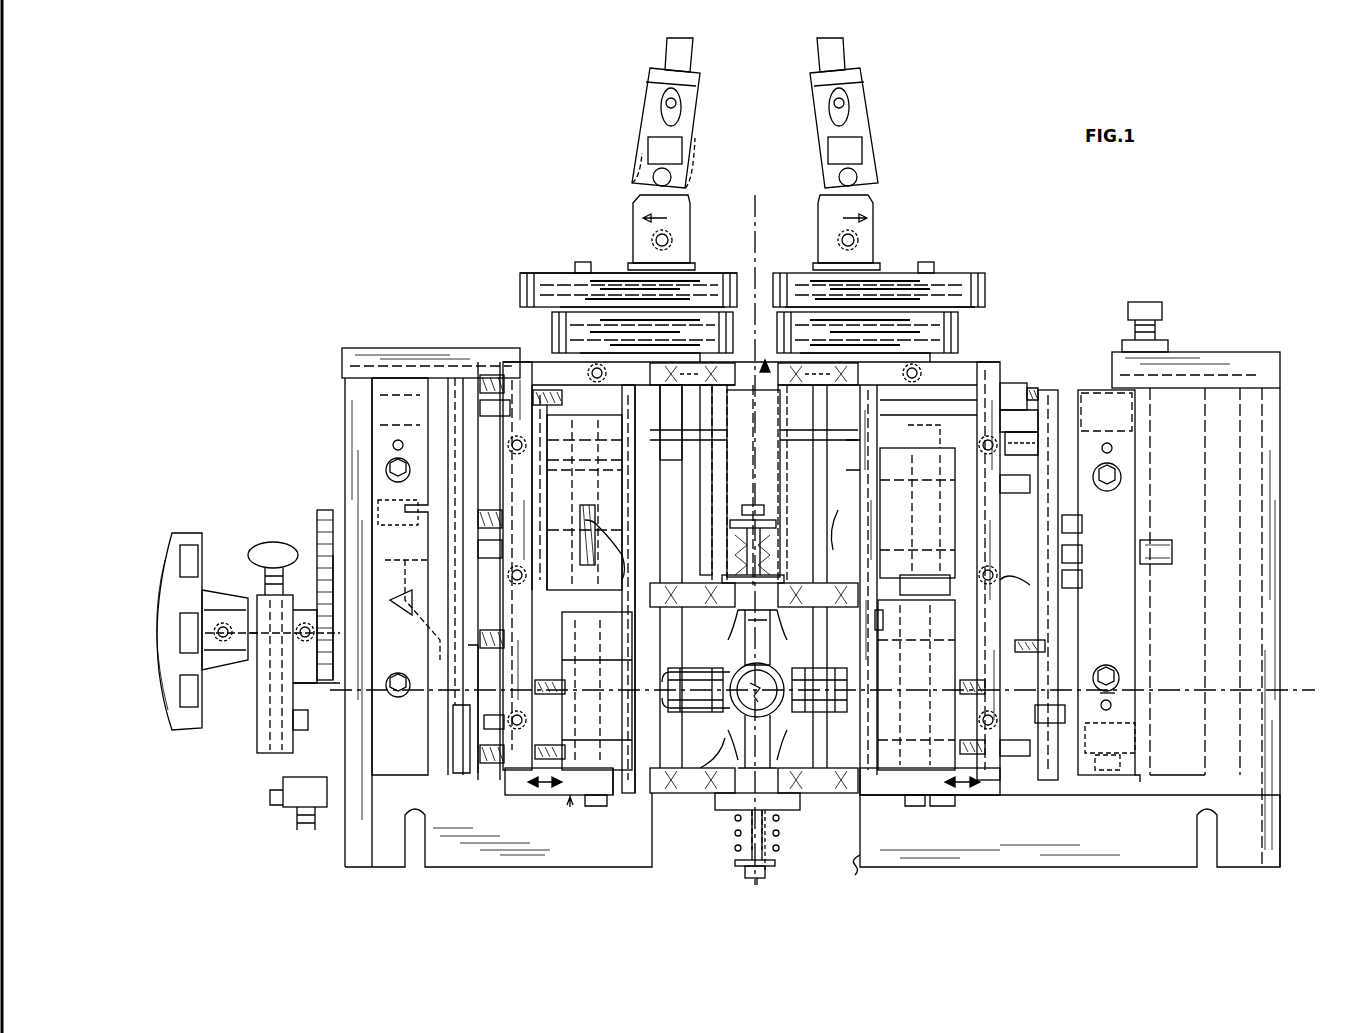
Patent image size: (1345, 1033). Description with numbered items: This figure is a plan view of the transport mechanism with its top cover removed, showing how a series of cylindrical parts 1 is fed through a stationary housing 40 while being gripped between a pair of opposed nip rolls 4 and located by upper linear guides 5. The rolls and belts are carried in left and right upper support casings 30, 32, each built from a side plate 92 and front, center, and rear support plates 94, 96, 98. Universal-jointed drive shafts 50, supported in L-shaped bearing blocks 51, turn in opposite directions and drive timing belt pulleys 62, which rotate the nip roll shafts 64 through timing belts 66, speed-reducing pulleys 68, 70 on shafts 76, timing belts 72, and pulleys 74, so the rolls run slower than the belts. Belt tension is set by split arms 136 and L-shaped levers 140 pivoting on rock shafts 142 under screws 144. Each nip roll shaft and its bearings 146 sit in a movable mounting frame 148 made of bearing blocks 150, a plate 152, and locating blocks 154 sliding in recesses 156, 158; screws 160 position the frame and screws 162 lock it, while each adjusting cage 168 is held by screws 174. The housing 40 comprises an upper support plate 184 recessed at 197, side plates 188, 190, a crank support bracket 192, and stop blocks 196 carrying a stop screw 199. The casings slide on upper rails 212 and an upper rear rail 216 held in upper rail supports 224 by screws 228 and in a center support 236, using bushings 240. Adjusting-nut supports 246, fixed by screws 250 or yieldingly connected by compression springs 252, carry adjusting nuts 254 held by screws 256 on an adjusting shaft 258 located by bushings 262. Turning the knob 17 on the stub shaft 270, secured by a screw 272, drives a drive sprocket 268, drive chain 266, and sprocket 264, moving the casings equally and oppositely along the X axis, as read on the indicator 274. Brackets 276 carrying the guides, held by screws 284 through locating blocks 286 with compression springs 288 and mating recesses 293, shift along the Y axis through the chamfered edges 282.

The cylindrical parts 1 is at (778, 650).
The nip rolls 4 is at (785, 683).
The upper linear guides 5 is at (770, 728).
The knob 17 is at (183, 730).
The upper support casing 30 is at (571, 814).
The upper support casing 32 is at (950, 813).
The enclosure / stationary housing 40 is at (957, 863).
The universal-jointed drive shafts 50 is at (666, 48).
The L-shaped bearing blocks 51 is at (540, 325).
The timing belt pulleys 62 is at (700, 273).
The nip roll shafts 64 is at (710, 420).
The timing belts 66 is at (985, 278).
The speed-reducing pulley 68 is at (525, 273).
The speed-reducing pulley 70 is at (555, 335).
The timing belts 72 is at (962, 335).
The pulleys 74 is at (770, 280).
The shafts 76 is at (565, 580).
The side plate 92 is at (600, 515).
The front support plate 94 is at (965, 793).
The center support plate 96 is at (931, 685).
The rear support plate 98 is at (1000, 355).
The split arms 136 is at (640, 640).
The L-shaped levers 140 is at (542, 782).
The rock shafts 142 is at (567, 643).
The screws 144 is at (1045, 690).
The bearings 146 is at (648, 795).
The movable mounting frames 148 is at (767, 362).
The bearing blocks 150 is at (848, 522).
The plate 152 is at (849, 469).
The locating blocks 154 is at (865, 480).
The recess 156 is at (615, 810).
The recess 158 is at (604, 353).
The screws 160 is at (472, 760).
The screws 162 is at (907, 813).
The adjusting cage 168 is at (960, 445).
The screws 174 is at (1065, 505).
The upper support plate 184 is at (504, 874).
The side plate 188 is at (345, 840).
The side plate 190 is at (1282, 400).
The crank support bracket 192 is at (257, 758).
The stop blocks 196 is at (375, 348).
The recess 197 is at (837, 873).
The stop screw 199 is at (1165, 305).
The upper rails 212 is at (440, 755).
The upper rail 216 is at (435, 380).
The upper rail supports 224 is at (375, 460).
The screws 228 is at (1125, 785).
The center support 236 is at (713, 475).
The bushings 240 is at (667, 450).
The upper adjusting-nut supports 246 is at (458, 772).
The screws 250 is at (495, 482).
The compression springs 252 is at (1035, 725).
The adjusting nut 254 is at (480, 522).
The screws 256 is at (475, 406).
The adjusting shaft 258 is at (1158, 538).
The bushings 262 is at (737, 508).
The sprocket 264 is at (323, 515).
The drive chain 266 is at (320, 553).
The drive sprocket 268 is at (323, 687).
The stub shaft 270 is at (229, 661).
The screw 272 is at (253, 545).
The indicator 274 is at (440, 672).
The brackets 276 is at (705, 770).
The chamfered edges 282 is at (720, 795).
The screw 284 is at (748, 874).
The locating block 286 is at (790, 810).
The compression springs 288 is at (734, 836).
The mating recesses 293 is at (765, 800).
The X axis X is at (1310, 688).
The Y axis Y is at (767, 188).